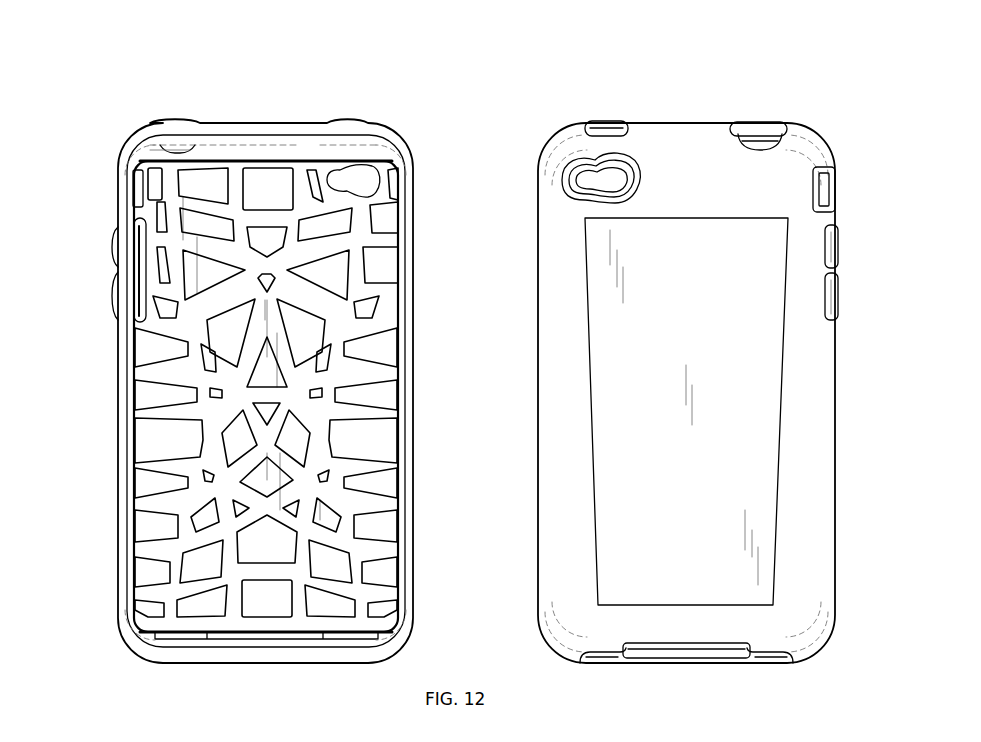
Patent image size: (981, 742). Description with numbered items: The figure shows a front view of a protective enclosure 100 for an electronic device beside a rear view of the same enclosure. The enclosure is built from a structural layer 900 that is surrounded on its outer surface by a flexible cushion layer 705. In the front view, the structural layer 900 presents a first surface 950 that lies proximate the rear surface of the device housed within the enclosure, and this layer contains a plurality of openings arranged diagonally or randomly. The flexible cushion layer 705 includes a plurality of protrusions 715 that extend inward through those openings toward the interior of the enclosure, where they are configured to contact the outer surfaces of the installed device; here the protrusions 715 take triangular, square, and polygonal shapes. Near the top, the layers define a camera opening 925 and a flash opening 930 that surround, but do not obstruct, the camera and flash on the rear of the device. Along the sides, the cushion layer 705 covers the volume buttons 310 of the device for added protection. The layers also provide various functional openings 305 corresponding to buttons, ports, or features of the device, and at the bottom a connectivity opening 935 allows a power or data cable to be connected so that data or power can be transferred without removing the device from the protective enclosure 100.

The protective enclosure 100 is at (152, 92).
The flexible cushion layer 705 is at (410, 548).
The volume buttons 310 is at (114, 232).
The structural layer 900 is at (233, 180).
The protrusions 715 is at (305, 323).
The first surface 950 is at (248, 465).
The flash opening 930 is at (332, 177).
The camera opening 925 is at (368, 178).
The functional openings 305 is at (760, 135).
The connectivity opening 935 is at (713, 650).